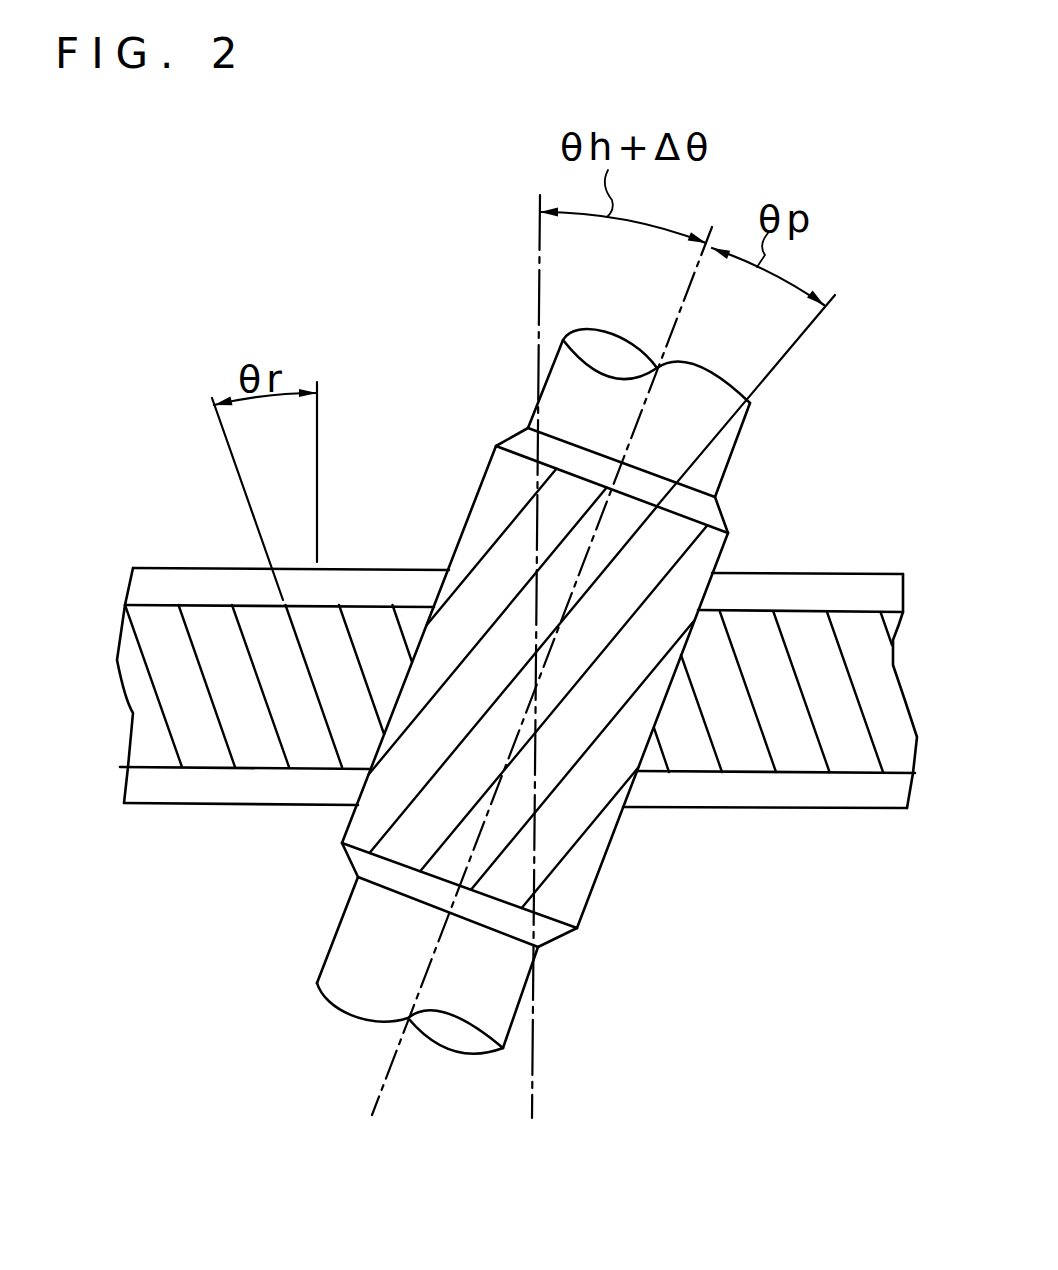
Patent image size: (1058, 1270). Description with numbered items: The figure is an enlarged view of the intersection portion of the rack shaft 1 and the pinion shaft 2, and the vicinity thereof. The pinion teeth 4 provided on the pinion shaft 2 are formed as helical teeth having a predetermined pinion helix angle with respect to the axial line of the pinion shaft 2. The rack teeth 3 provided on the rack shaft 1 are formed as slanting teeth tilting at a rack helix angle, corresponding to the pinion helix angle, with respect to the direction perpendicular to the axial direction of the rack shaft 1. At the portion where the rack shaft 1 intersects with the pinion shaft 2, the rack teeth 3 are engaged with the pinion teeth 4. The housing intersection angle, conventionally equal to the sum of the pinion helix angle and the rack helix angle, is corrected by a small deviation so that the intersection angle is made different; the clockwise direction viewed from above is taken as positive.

The rack shaft 1 is at (178, 568).
The pinion shaft 2 is at (718, 463).
The rack teeth 3 is at (193, 743).
The pinion teeth 4 is at (728, 538).